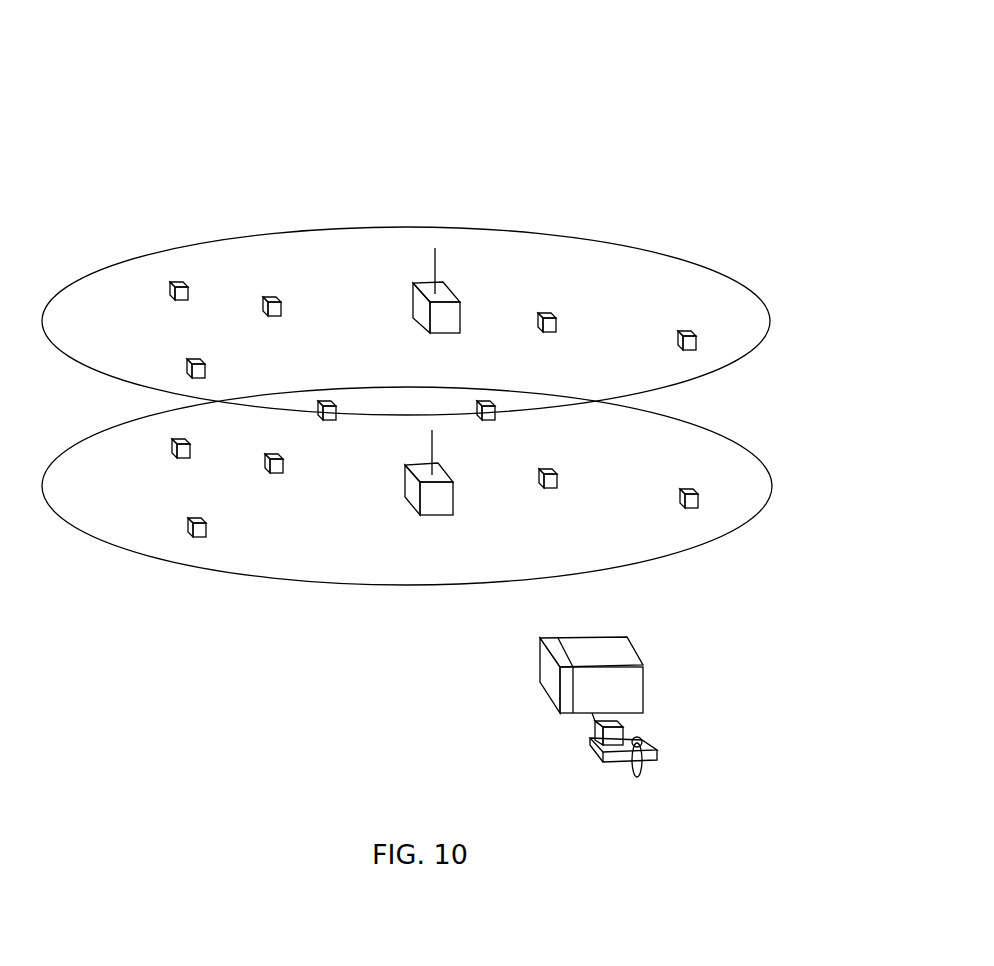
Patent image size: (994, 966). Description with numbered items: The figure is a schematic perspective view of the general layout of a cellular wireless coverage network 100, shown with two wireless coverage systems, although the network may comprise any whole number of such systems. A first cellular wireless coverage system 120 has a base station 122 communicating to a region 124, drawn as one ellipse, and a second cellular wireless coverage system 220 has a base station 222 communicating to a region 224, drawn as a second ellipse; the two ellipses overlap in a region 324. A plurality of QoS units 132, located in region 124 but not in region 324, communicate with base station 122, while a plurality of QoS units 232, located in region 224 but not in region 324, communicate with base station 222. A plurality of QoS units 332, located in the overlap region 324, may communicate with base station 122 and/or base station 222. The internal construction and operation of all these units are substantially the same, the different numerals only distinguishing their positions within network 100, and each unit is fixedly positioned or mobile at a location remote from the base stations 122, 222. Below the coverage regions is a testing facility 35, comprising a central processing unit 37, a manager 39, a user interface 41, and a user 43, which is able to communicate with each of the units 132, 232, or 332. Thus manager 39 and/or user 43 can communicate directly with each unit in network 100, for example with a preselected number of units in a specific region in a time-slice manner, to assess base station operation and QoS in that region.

The cellular wireless coverage network 100 is at (619, 68).
The first cellular wireless coverage system 120 is at (645, 219).
The region 124 is at (704, 264).
The base station 122 is at (449, 292).
The QoS units 132 is at (182, 302).
The second cellular wireless coverage system 220 is at (116, 598).
The region 224 is at (760, 452).
The base station 222 is at (442, 473).
The QoS units 232 is at (182, 460).
The region 324 is at (240, 408).
The QoS units 332 is at (339, 406).
The testing facility 35 is at (623, 658).
The central processing unit 37 is at (552, 672).
The manager 39 is at (567, 692).
The user interface 41 is at (590, 742).
The user 43 is at (637, 775).